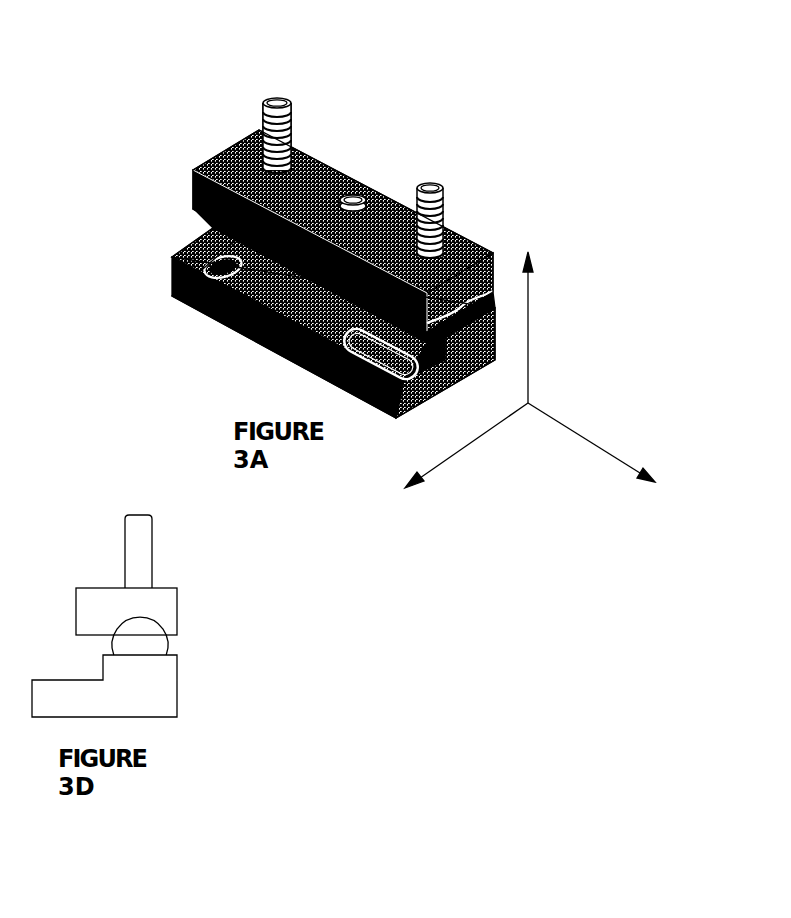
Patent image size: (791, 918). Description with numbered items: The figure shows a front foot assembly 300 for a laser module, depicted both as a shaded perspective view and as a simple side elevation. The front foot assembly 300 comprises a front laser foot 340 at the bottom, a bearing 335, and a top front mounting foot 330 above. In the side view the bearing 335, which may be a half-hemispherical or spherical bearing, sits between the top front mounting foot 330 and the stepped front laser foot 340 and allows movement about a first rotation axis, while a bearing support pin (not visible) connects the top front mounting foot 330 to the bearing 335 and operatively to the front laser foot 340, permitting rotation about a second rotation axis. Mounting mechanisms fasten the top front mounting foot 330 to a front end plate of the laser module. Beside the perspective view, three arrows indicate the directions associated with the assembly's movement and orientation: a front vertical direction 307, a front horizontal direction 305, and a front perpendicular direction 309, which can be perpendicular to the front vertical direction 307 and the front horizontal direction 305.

In FIG. 3A, the front foot assembly 300 is at (361, 136).
In FIG. 3A, the front horizontal direction 305 is at (464, 503).
In FIG. 3A, the front vertical direction 307 is at (612, 325).
In FIG. 3A, the front perpendicular direction 309 is at (642, 500).
In FIG. 3D, the top front mounting foot 330 is at (177, 608).
In FIG. 3D, the bearing 335 is at (168, 643).
In FIG. 3D, the front laser foot 340 is at (177, 690).